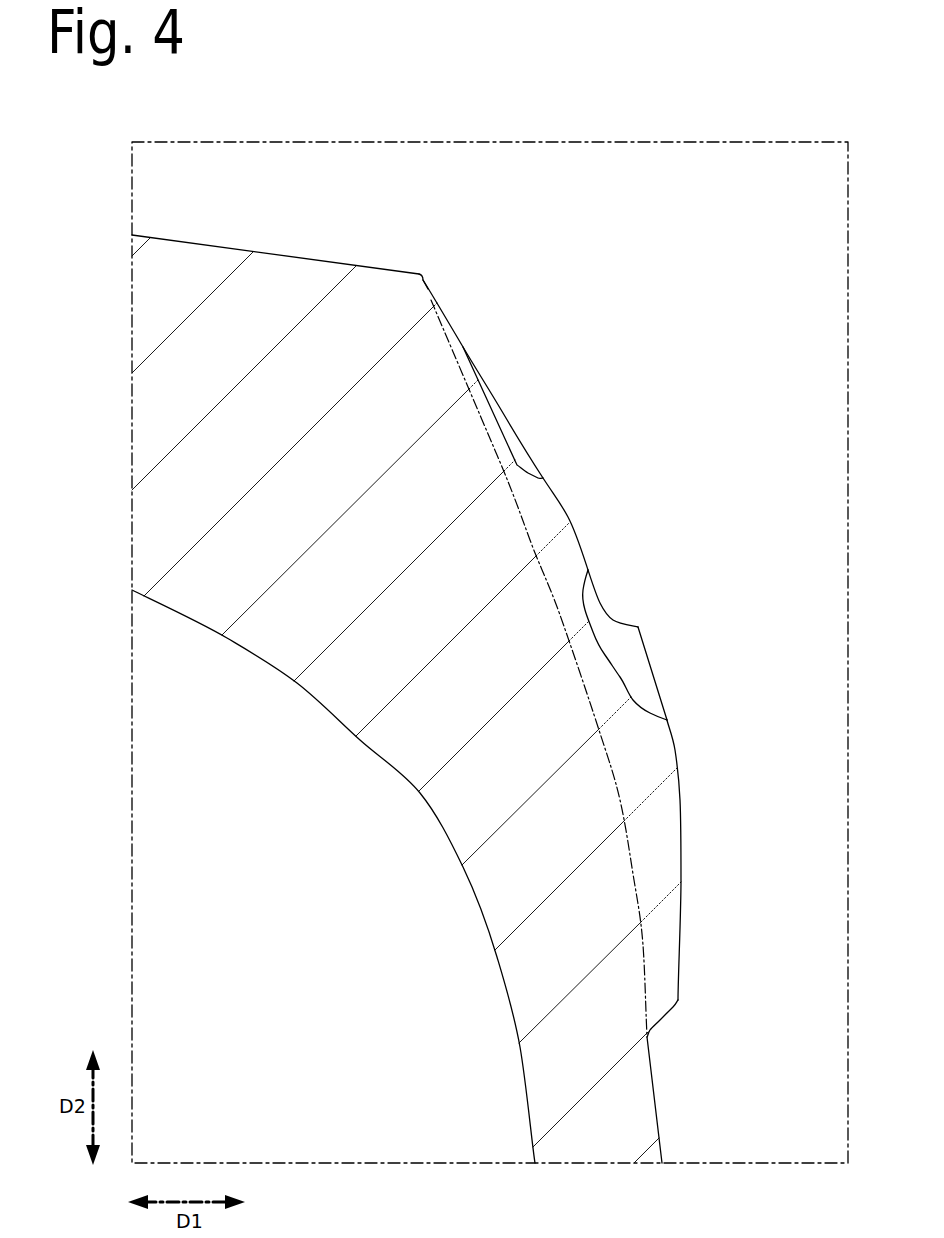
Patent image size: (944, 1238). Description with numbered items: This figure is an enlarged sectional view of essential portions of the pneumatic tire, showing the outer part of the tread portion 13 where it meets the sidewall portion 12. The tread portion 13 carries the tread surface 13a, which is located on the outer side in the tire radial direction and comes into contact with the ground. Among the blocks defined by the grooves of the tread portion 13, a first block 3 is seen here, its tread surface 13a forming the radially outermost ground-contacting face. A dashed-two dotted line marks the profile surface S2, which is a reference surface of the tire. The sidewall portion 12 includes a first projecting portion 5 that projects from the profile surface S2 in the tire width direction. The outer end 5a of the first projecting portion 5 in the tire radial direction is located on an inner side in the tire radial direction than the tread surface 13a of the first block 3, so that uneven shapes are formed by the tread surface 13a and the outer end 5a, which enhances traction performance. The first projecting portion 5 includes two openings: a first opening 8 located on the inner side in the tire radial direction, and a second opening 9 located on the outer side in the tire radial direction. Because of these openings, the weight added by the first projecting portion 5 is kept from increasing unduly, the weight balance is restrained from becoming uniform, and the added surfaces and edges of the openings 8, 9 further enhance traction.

The tread portion 13 is at (188, 185).
The tread surface 13a is at (243, 250).
The first block 3 is at (483, 654).
The outer end of first projecting portion 5a is at (431, 296).
The first projecting portion 5 is at (568, 517).
The second opening 9 is at (498, 413).
The first opening 8 is at (638, 638).
The profile surface S2 is at (645, 968).
The sidewall portion 12 is at (727, 1013).